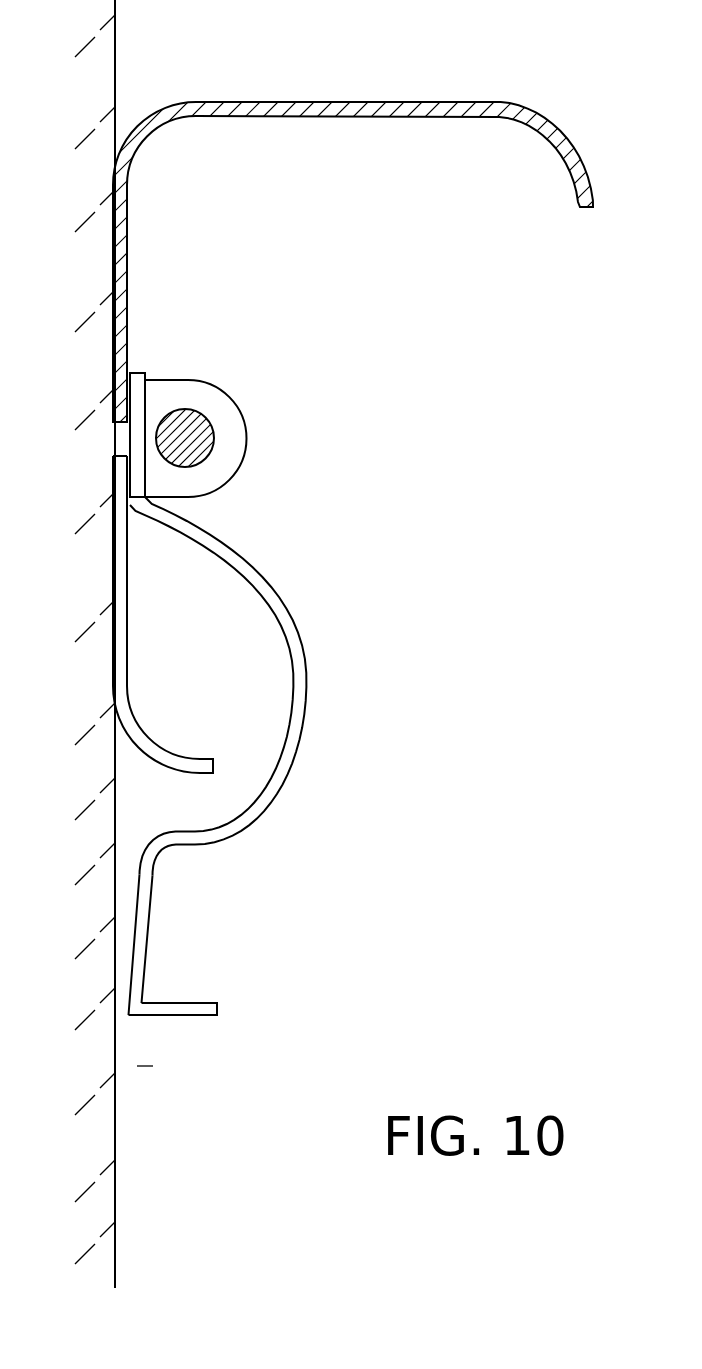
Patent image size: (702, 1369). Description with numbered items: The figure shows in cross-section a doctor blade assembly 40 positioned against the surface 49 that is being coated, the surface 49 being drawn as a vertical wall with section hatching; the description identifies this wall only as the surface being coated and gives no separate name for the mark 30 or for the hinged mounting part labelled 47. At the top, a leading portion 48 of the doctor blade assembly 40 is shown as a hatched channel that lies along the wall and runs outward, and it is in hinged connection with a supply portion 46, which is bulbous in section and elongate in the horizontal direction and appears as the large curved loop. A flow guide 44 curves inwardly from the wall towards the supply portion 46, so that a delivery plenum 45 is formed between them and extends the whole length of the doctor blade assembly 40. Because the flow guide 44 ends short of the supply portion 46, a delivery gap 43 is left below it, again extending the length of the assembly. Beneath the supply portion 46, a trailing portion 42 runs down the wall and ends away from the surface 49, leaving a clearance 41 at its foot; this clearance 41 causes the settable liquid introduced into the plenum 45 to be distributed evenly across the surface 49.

The wall 30 is at (115, 1080).
The doctor blade assembly 40 is at (351, 350).
The clearance 41 is at (120, 1008).
The trailing portion 42 is at (142, 917).
The delivery gap 43 is at (179, 805).
The flow guide 44 is at (180, 748).
The delivery plenum 45 is at (203, 648).
The supply portion 46 is at (258, 582).
The mounting bracket with hole 47 is at (200, 427).
The leading portion 48 is at (296, 118).
The surface 49 is at (116, 1163).